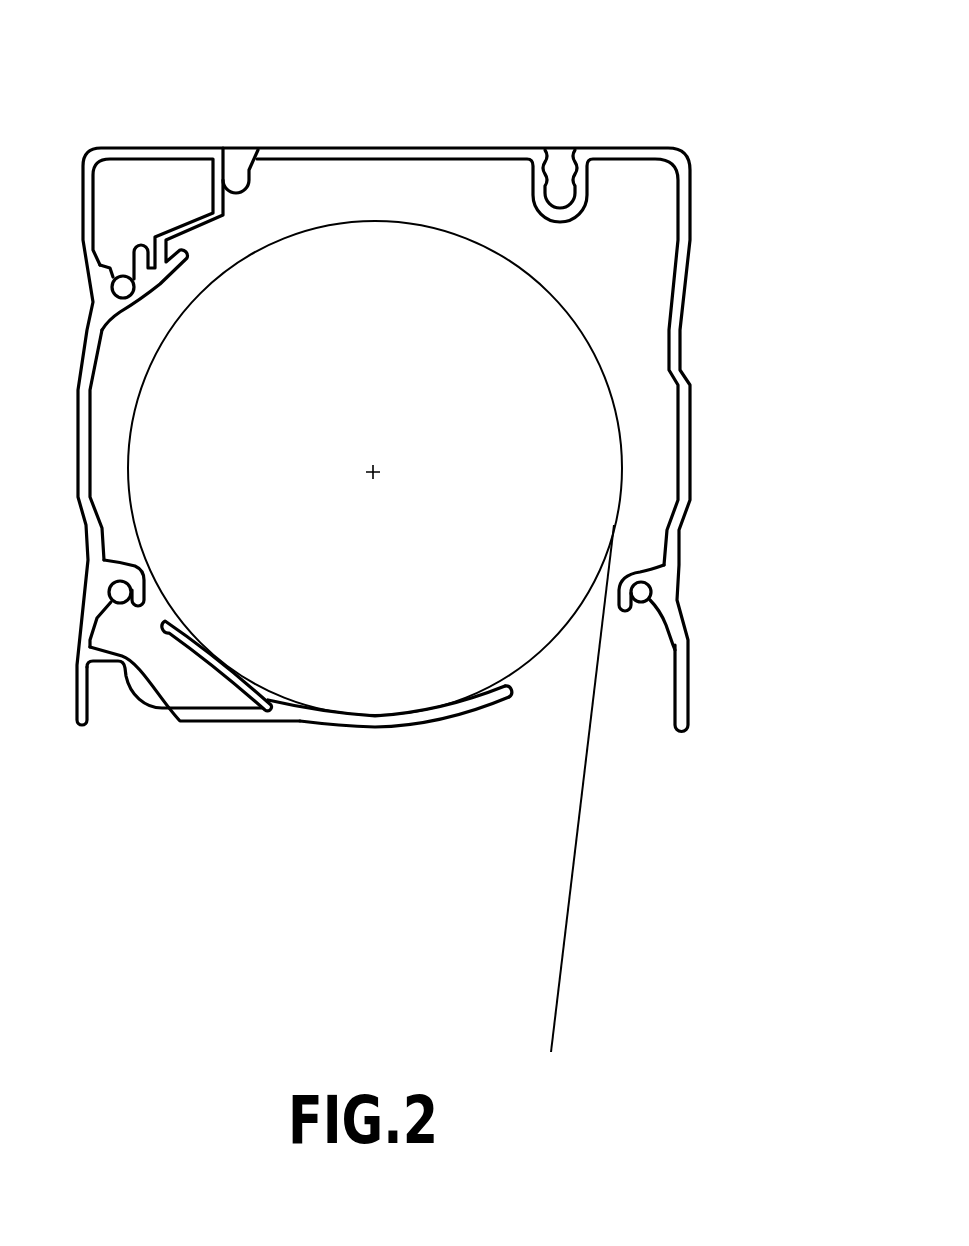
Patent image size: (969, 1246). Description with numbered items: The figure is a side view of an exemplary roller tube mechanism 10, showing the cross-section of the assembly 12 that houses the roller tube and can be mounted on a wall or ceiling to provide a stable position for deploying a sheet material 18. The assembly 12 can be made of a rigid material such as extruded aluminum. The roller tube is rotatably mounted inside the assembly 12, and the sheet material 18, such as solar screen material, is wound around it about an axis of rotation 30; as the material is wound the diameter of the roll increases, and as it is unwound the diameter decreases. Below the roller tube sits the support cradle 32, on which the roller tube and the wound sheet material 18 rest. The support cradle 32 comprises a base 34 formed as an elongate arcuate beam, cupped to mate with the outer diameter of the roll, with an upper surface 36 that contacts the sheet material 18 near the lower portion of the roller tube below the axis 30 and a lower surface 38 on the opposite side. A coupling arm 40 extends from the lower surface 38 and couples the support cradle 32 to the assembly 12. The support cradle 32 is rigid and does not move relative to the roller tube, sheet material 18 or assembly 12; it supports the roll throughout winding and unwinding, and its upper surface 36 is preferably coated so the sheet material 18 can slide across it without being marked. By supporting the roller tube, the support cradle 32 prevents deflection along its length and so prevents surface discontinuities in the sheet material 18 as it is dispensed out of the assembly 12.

The roller tube mechanism 10 is at (147, 90).
The assembly 12 is at (750, 148).
The sheet material 18 is at (563, 956).
The axis of rotation 30 is at (368, 472).
The support cradle 32 is at (291, 733).
The base 34 is at (357, 724).
The upper surface 36 is at (481, 690).
The lower surface 38 is at (494, 710).
The coupling arm 40 is at (140, 727).